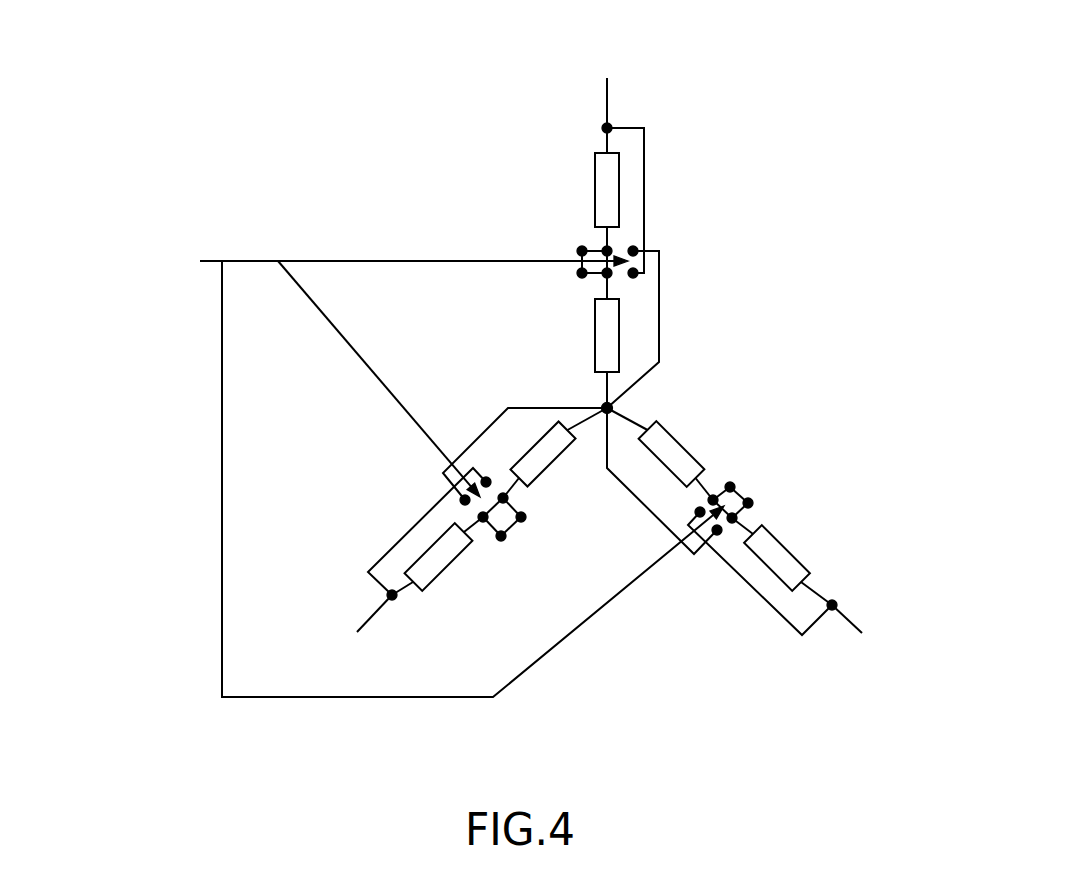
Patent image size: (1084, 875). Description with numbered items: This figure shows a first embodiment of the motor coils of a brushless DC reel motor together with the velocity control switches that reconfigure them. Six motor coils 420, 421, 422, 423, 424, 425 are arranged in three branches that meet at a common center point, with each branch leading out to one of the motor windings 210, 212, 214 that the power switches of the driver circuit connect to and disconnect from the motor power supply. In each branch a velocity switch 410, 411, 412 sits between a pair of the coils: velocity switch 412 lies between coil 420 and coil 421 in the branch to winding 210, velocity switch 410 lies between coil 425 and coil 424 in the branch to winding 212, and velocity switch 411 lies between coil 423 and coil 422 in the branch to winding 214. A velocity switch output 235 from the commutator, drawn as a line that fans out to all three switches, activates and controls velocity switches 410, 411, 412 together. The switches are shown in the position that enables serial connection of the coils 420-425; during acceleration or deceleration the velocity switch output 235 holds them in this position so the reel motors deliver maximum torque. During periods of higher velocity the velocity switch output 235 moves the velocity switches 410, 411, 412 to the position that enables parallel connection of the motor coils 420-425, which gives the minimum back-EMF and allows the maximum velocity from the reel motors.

The motor winding 210 is at (608, 90).
The motor winding 212 is at (370, 622).
The motor winding 214 is at (853, 623).
The velocity switch output 235 is at (253, 238).
The velocity switch 410 is at (510, 532).
The velocity switch 411 is at (743, 492).
The velocity switch 412 is at (579, 250).
The motor coil 420 is at (595, 210).
The motor coil 421 is at (595, 360).
The motor coil 422 is at (822, 555).
The motor coil 423 is at (710, 450).
The motor coil 424 is at (455, 563).
The motor coil 425 is at (551, 466).